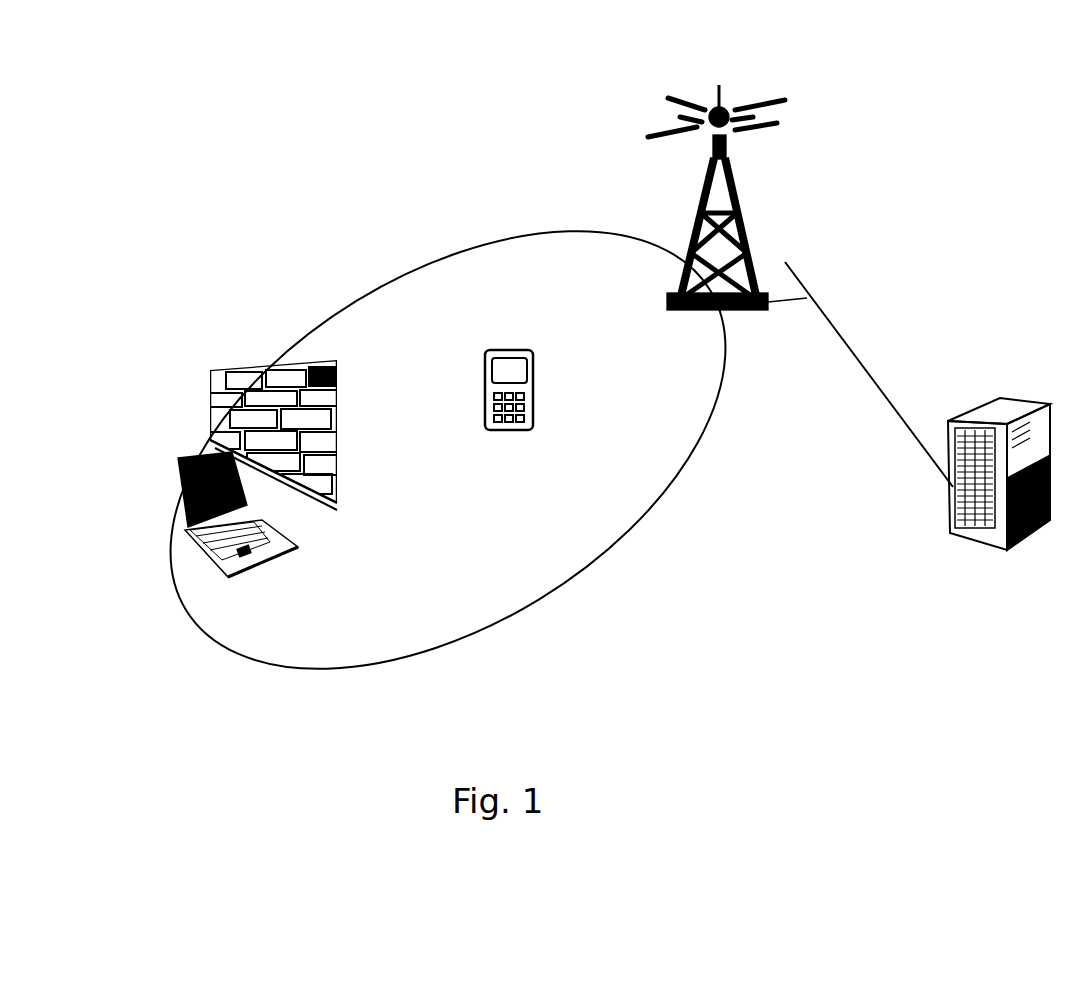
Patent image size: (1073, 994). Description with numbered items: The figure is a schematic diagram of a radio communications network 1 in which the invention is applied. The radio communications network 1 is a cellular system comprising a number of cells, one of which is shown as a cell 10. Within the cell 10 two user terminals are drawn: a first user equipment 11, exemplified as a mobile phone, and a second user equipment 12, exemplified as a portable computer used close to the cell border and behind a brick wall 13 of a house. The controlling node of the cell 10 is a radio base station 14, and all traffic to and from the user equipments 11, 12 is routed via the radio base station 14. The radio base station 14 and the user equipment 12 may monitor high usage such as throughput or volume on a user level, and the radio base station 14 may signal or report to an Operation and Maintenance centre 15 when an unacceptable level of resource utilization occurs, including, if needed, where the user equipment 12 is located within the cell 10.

The radio communications network 1 is at (320, 158).
The cell 10 is at (447, 560).
The first user equipment 11 is at (552, 381).
The second user equipment 12 is at (172, 470).
The brick wall 13 is at (242, 370).
The radio base station 14 is at (737, 213).
The Operation and Maintenance centre 15 is at (953, 527).